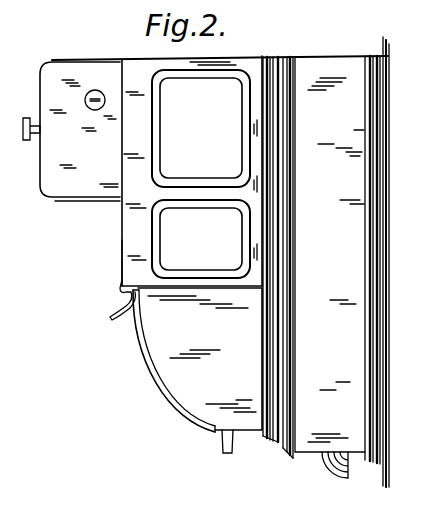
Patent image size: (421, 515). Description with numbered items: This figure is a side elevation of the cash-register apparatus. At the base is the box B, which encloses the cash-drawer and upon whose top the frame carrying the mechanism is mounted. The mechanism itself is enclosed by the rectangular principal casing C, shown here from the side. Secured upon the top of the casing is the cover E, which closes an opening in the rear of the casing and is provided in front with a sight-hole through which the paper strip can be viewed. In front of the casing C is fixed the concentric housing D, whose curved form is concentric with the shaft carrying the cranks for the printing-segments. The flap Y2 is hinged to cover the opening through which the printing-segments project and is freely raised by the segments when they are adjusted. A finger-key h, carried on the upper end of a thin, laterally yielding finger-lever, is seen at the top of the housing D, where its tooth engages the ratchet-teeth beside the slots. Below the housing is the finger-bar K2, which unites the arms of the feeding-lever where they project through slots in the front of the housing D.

The cover E is at (71, 131).
The principal casing C is at (192, 171).
The box B is at (342, 262).
The concentric housing D is at (197, 360).
The flap Y2 is at (113, 243).
The finger-key h is at (110, 315).
The finger-bar K2 is at (224, 453).